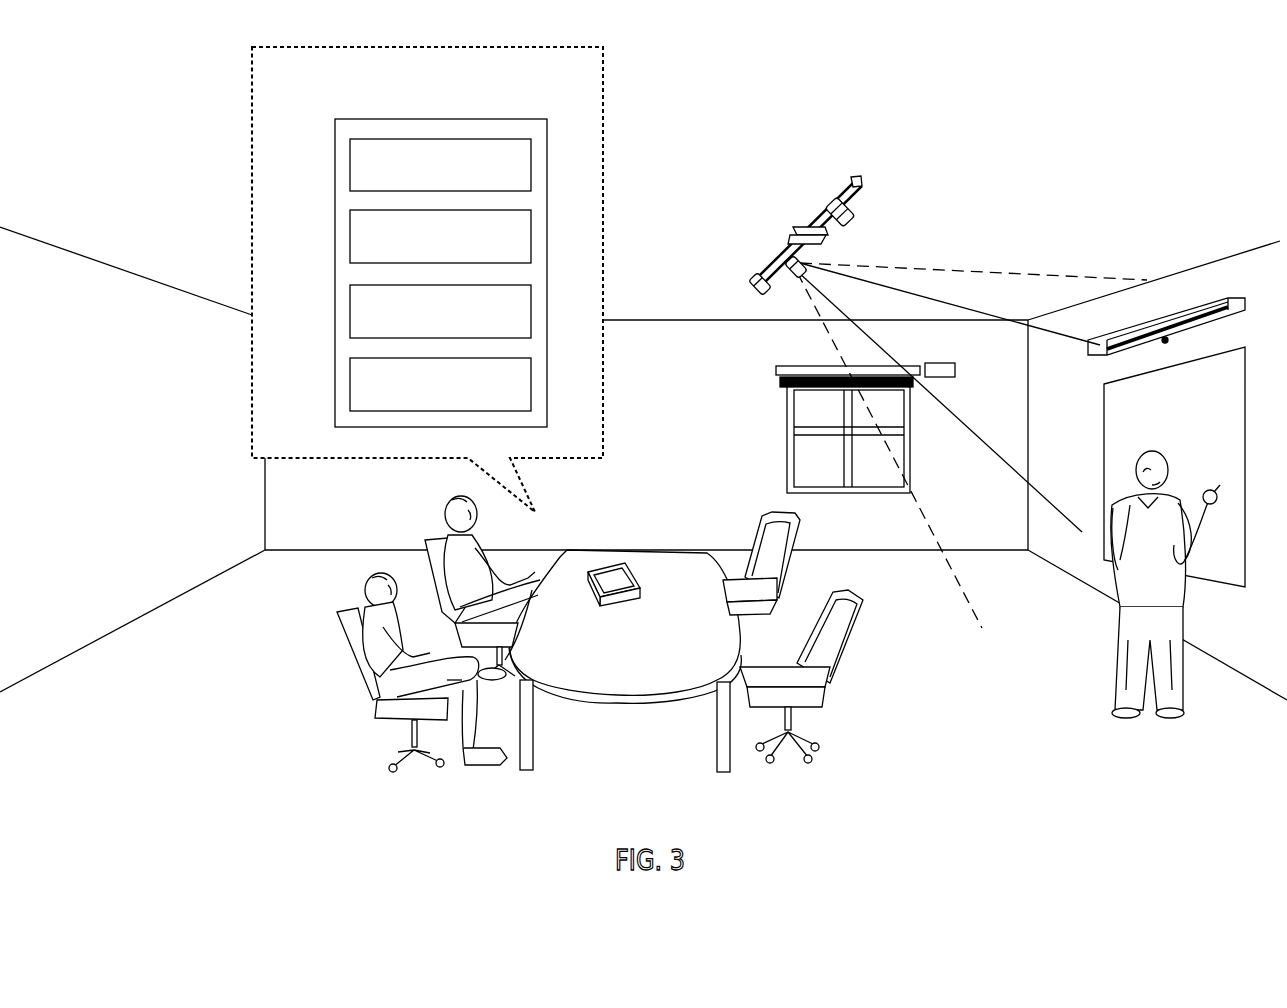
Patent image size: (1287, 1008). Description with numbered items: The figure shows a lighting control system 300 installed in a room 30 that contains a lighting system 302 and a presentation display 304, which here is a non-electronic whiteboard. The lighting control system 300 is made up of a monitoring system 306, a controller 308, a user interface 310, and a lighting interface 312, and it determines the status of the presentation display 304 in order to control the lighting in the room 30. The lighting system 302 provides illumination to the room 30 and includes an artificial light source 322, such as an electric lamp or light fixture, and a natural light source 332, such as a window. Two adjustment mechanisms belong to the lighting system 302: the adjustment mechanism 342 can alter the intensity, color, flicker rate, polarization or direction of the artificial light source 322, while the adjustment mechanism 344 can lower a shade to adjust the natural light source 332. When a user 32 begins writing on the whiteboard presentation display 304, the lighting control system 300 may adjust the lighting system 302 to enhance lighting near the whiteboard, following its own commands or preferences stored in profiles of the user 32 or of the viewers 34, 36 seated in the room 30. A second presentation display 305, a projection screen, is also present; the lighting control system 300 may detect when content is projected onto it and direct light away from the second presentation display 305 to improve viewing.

The room 30 is at (220, 793).
The user 32 is at (1105, 698).
The viewer 34 is at (360, 658).
The viewer 36 is at (438, 517).
The lighting control system 300 is at (446, 326).
The lighting system 302 is at (897, 375).
The presentation display 304 is at (1123, 443).
The second presentation display 305 is at (1165, 327).
The monitoring system 306 is at (440, 165).
The controller 308 is at (440, 236).
The user interface 310 is at (440, 311).
The lighting interface 312 is at (440, 384).
The artificial light source 322 is at (813, 217).
The natural light source 332 is at (787, 467).
The adjustment mechanism 342 is at (788, 229).
The adjustment mechanism 344 is at (955, 370).